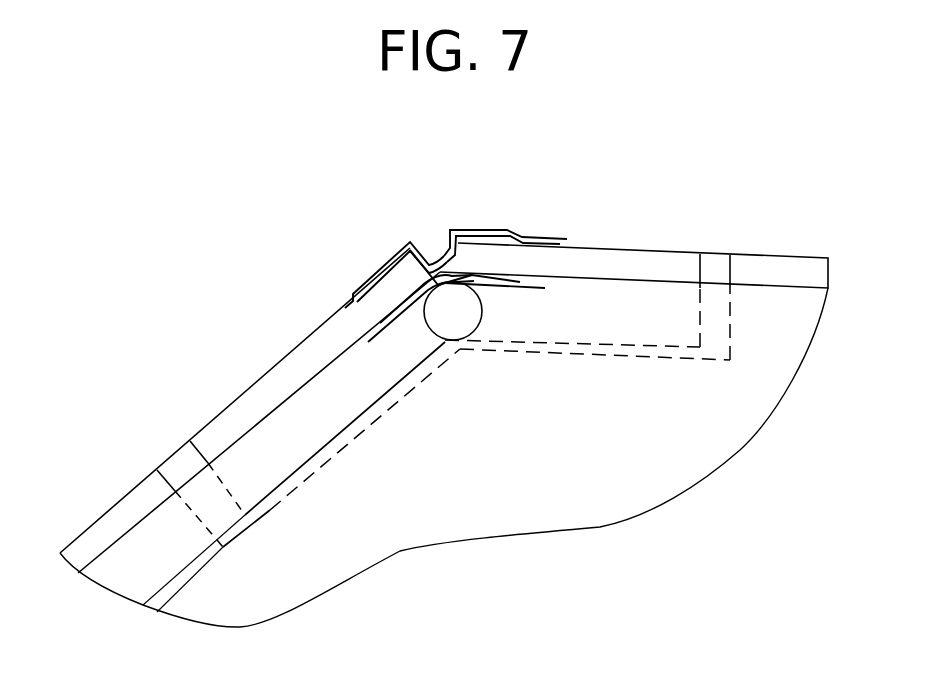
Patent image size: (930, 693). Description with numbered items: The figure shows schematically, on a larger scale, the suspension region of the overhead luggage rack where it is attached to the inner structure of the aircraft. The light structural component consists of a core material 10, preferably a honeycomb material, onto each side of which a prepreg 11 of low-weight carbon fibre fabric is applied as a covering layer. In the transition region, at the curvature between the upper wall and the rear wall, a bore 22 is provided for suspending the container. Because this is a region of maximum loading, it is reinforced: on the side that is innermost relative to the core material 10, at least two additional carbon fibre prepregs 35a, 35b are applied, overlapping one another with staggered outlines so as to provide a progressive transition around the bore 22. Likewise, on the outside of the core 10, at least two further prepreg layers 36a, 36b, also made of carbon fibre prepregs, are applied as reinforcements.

The core material 10 is at (598, 260).
The prepreg 11 is at (655, 280).
The bore 22 is at (453, 315).
The additional carbon fibre prepreg 35a is at (393, 317).
The additional carbon fibre prepreg 35b is at (410, 307).
The further prepreg layer 36a is at (382, 270).
The further prepreg layer 36b is at (465, 228).